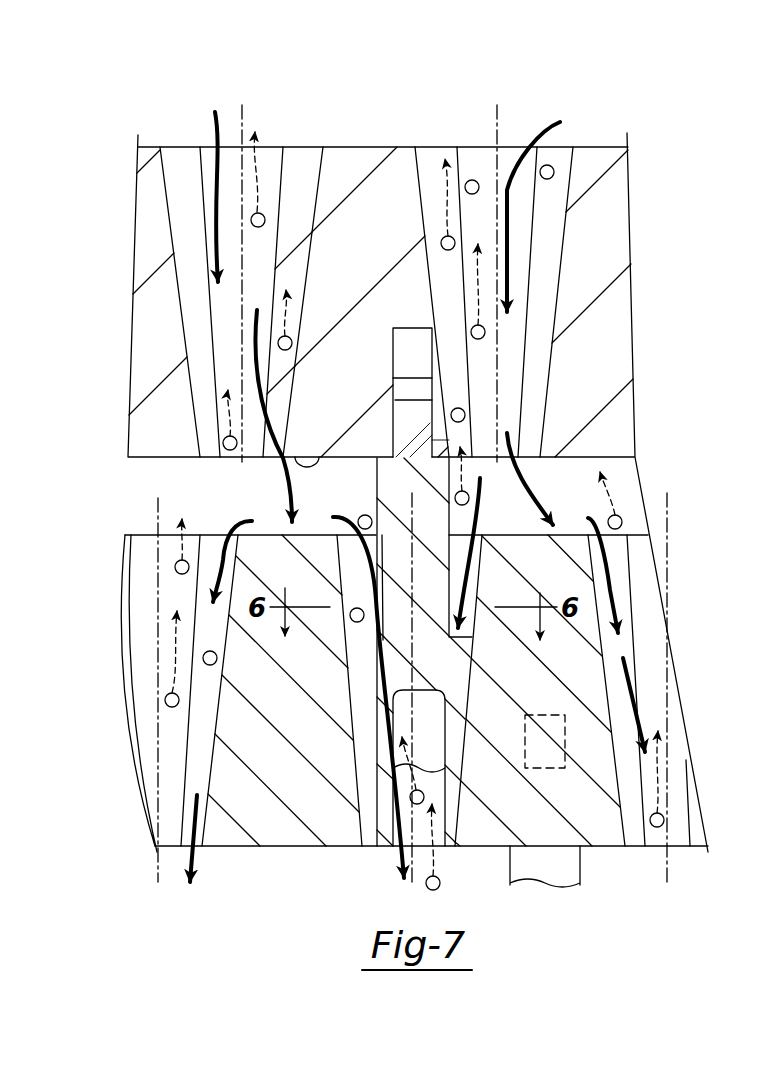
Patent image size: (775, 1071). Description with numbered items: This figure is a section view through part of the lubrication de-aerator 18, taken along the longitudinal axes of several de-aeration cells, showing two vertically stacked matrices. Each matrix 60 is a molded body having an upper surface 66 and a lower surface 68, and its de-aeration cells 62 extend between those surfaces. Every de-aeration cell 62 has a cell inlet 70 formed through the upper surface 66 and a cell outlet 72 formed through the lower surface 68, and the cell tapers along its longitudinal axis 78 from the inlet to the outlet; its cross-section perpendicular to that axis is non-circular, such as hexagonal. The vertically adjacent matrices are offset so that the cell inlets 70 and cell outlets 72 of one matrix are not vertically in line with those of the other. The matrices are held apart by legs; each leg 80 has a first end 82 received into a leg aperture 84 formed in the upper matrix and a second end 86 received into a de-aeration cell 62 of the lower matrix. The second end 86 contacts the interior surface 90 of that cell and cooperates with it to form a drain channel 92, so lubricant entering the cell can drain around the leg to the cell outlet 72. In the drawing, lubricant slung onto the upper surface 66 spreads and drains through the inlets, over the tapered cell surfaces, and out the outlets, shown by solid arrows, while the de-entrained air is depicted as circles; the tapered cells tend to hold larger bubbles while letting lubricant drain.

The lubrication de-aerator 18 is at (121, 826).
The matrix 60 is at (615, 325).
The de-aeration cell 62 is at (183, 160).
The upper surface 66 is at (387, 147).
The lower surface 68 is at (318, 458).
The cell inlet 70 is at (300, 130).
The cell outlet 72 is at (205, 460).
The longitudinal axis 78 is at (243, 107).
The leg 80 is at (428, 450).
The first end 82 is at (418, 400).
The leg aperture 84 is at (407, 340).
The second end 86 is at (443, 661).
The interior surface 90 is at (357, 693).
The drain channel 92 is at (430, 710).